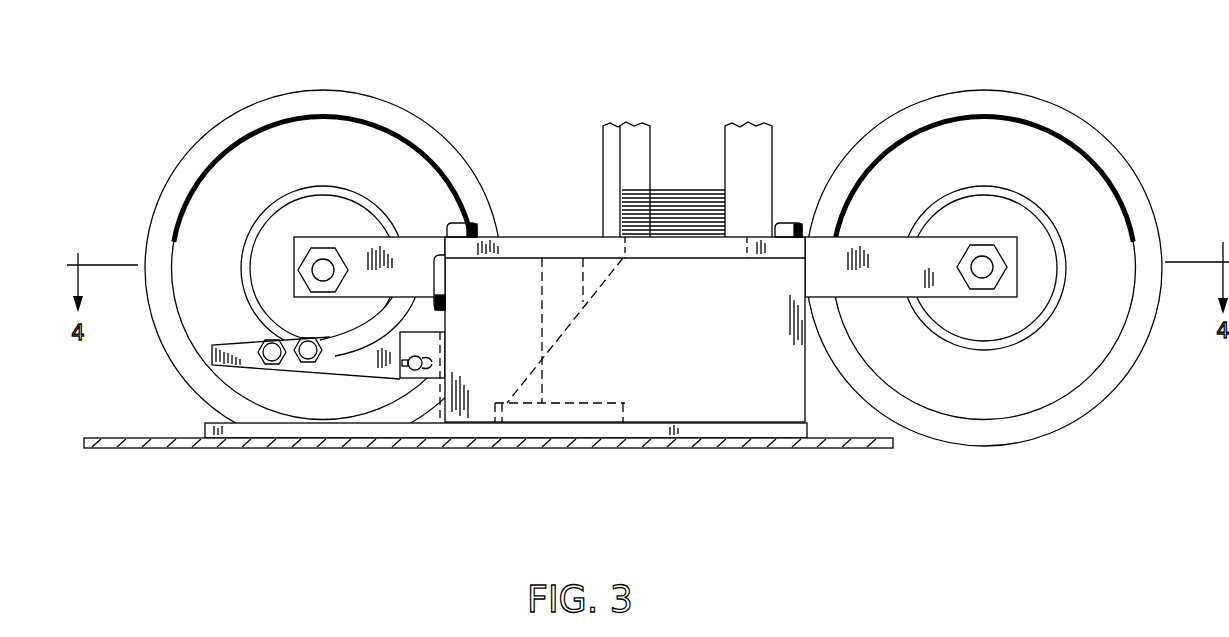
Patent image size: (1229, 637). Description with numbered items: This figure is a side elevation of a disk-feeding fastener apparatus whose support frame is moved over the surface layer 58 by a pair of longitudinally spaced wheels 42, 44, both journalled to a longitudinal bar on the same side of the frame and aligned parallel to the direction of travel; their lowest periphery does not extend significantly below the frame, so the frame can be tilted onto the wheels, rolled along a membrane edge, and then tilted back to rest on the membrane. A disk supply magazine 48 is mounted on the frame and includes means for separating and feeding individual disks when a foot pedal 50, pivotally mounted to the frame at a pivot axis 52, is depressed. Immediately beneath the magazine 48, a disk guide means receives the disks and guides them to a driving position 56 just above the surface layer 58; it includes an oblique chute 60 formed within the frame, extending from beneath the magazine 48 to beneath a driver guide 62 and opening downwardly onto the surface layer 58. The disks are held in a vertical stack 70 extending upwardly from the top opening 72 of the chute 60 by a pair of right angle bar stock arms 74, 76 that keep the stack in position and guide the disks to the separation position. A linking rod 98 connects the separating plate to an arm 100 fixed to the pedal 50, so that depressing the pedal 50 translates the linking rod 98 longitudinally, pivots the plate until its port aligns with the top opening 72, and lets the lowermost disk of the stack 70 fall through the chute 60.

The wheel 42 is at (1055, 373).
The wheel 44 is at (212, 212).
The disk supply magazine 48 is at (576, 186).
The foot pedal 50 is at (297, 337).
The pivot axis 52 is at (415, 372).
The driving position 56 is at (559, 420).
The surface layer 58 is at (160, 448).
The oblique chute 60 is at (628, 395).
The driver guide 62 is at (552, 270).
The vertical stack 70 is at (676, 190).
The top opening 72 is at (705, 258).
The right angle bar stock arm 74 is at (762, 147).
The right angle bar stock arm 76 is at (609, 157).
The linking rod 98 is at (397, 276).
The arm 100 is at (354, 332).